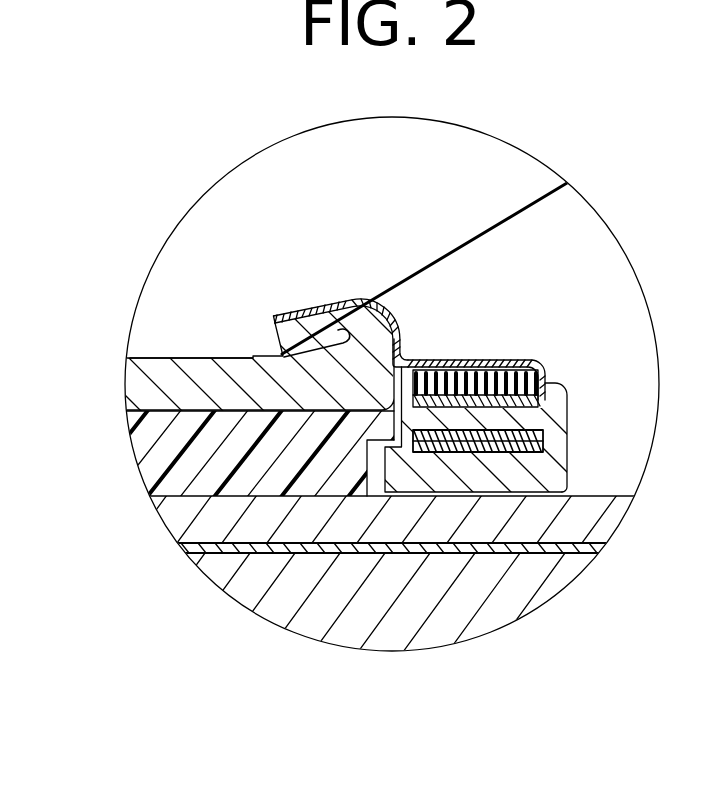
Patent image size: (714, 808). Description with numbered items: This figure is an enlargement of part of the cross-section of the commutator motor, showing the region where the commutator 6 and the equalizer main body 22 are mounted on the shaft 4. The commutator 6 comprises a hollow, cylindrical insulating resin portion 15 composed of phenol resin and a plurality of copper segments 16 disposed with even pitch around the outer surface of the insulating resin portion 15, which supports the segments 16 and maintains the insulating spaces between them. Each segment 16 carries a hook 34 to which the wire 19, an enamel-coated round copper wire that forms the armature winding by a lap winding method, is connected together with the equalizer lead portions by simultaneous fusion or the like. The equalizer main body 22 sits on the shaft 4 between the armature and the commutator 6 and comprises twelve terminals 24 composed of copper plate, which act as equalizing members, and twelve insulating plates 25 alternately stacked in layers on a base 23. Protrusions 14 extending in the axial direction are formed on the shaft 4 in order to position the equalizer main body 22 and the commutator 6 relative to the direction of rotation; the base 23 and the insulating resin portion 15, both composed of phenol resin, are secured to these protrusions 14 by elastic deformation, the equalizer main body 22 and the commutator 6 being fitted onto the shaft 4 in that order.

The shaft 4 is at (245, 582).
The protrusions 14 is at (182, 553).
The insulating resin portion 15 is at (150, 455).
The commutator 6 is at (135, 385).
The segments 16 is at (235, 383).
The hooks 34 is at (320, 327).
The terminals 24 is at (483, 360).
The wire 19 is at (460, 246).
The insulating plates 25 is at (422, 377).
The equalizer main body 22 is at (455, 357).
The base 23 is at (567, 393).